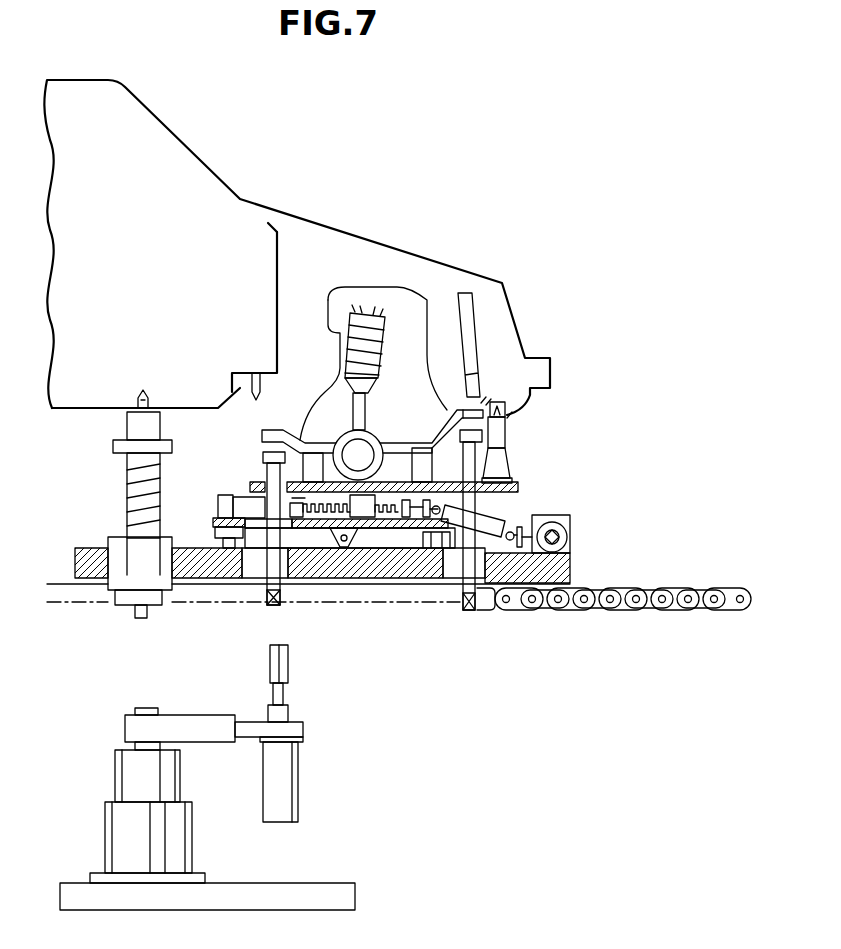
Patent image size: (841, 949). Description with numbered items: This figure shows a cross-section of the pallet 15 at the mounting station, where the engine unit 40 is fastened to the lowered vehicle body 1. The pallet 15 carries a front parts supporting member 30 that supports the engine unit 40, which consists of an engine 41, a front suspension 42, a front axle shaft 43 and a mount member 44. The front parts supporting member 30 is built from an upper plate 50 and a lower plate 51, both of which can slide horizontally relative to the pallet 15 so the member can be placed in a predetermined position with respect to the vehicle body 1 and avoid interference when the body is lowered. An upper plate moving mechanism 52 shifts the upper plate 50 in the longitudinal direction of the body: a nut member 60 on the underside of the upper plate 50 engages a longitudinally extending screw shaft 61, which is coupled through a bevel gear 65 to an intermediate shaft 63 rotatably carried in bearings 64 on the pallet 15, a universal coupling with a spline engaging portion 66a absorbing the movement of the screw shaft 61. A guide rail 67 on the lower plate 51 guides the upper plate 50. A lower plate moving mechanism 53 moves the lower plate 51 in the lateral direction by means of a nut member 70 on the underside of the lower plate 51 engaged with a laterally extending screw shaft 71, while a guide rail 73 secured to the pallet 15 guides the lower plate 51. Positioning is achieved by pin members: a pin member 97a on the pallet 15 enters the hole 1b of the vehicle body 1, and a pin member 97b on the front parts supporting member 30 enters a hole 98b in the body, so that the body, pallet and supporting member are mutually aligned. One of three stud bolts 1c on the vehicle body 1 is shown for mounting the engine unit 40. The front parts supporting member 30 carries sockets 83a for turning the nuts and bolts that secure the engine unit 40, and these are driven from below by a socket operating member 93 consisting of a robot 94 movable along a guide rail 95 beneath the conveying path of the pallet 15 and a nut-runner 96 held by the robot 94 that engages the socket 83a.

The vehicle body 1 is at (310, 220).
The hole 1b is at (143, 389).
The stud bolt 1c is at (240, 376).
The pallet 15 is at (576, 598).
The front parts supporting member 30 is at (520, 490).
The engine unit 40 is at (426, 298).
The engine 41 is at (415, 303).
The front suspension 42 is at (357, 320).
The front axle shaft 43 is at (352, 450).
The mount member 44 is at (406, 440).
The upper plate 50 is at (520, 484).
The lower plate 51 is at (215, 522).
The upper plate moving mechanism 52 is at (570, 516).
The lower plate moving mechanism 53 is at (352, 549).
The nut member 60 is at (315, 540).
The screw shaft 61 is at (388, 500).
The intermediate shaft 63 is at (560, 546).
The bearing 64 is at (570, 576).
The bevel gear 65 is at (568, 529).
The spline engaging portion 66a is at (500, 516).
The guide rail 67 is at (232, 497).
The nut member 70 is at (384, 546).
The screw shaft 71 is at (340, 549).
The guide rail 73 is at (208, 552).
The socket 83a is at (268, 585).
The socket operating member 93 is at (105, 822).
The robot 94 is at (192, 838).
The guide rail 95 is at (316, 884).
The nut-runner 96 is at (291, 672).
The pin member 97a is at (126, 428).
The pin member 97b is at (500, 431).
The hole 98b is at (510, 400).